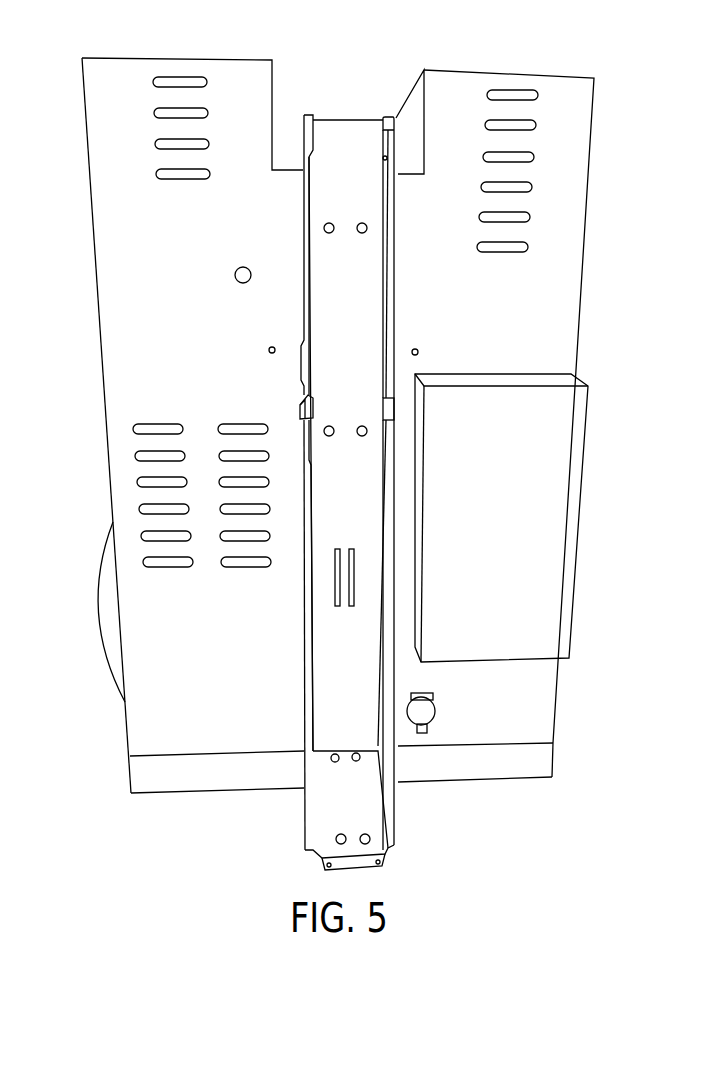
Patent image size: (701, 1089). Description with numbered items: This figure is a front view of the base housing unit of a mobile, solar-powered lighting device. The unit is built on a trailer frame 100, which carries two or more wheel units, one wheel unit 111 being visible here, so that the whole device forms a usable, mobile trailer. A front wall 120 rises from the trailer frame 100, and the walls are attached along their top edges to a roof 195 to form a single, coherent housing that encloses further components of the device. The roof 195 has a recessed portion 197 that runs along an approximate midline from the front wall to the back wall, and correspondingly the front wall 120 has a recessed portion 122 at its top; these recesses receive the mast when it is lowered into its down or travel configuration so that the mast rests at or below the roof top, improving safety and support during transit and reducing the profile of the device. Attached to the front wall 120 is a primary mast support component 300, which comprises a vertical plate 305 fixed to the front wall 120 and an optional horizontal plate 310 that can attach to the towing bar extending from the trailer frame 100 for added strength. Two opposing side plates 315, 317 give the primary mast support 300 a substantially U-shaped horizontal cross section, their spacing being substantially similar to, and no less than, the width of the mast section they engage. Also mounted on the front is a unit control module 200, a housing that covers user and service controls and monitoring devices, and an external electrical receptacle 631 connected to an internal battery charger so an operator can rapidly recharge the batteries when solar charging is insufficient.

The trailer frame 100 is at (147, 768).
The wheel unit 111 is at (98, 597).
The front wall 120 is at (214, 351).
The recessed portion 122 is at (403, 127).
The roof 195 is at (175, 58).
The recessed portion 197 is at (398, 70).
The unit control module 200 is at (511, 519).
The primary mast support component 300 is at (418, 228).
The vertical plate 305 is at (343, 693).
The horizontal plate 310 is at (363, 817).
The side plate 315 is at (395, 373).
The side plate 317 is at (300, 441).
The external electrical receptacle/plug/outlet 631 is at (437, 702).